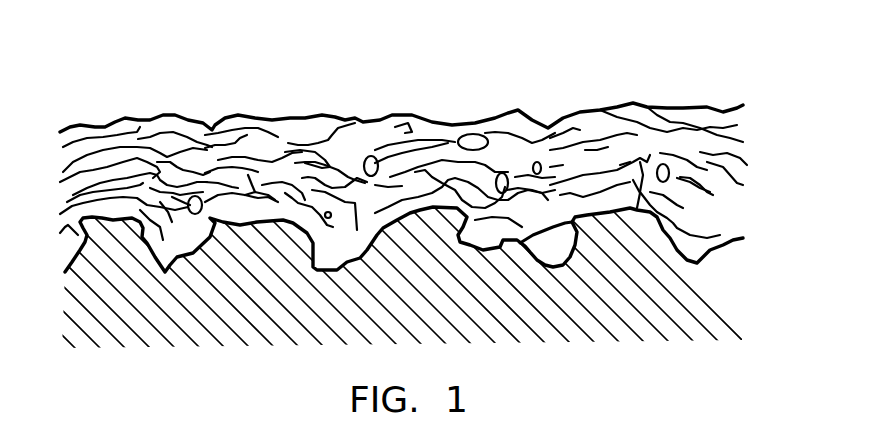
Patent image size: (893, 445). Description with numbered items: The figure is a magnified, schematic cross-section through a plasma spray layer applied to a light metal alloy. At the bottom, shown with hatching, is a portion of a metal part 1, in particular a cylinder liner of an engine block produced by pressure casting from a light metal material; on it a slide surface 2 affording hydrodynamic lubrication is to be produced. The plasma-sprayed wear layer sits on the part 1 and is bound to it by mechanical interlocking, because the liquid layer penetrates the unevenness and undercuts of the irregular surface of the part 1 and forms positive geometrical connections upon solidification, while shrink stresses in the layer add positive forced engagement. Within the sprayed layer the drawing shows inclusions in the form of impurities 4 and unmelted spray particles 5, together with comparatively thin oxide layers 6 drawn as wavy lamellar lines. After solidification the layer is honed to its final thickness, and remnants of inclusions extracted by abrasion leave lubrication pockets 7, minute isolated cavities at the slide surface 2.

The metal part 1 is at (723, 288).
The slide surface 2 is at (723, 200).
The impurities 4 is at (177, 238).
The unmelted spray particles 5 is at (372, 157).
The oxide layers 6 is at (597, 150).
The lubrication pockets 7 is at (722, 258).